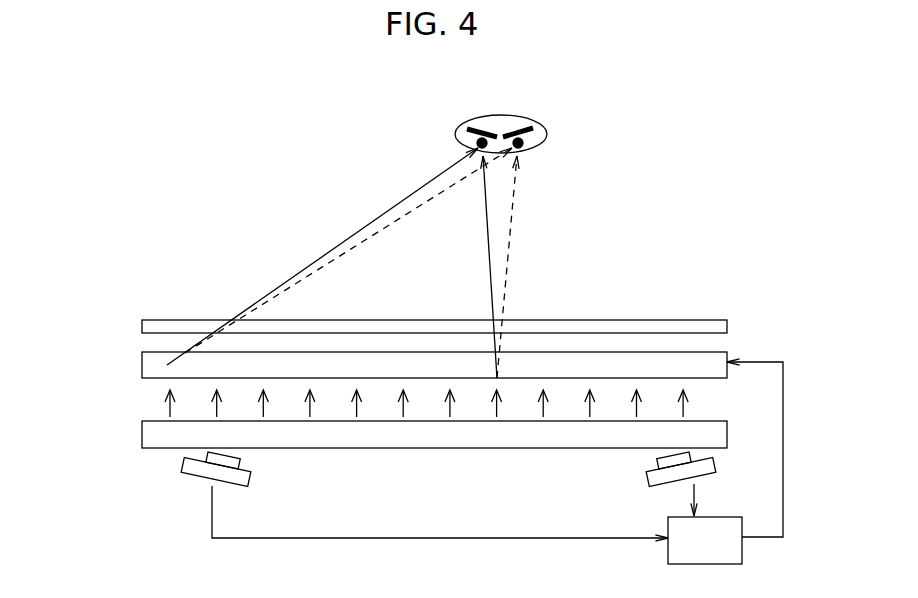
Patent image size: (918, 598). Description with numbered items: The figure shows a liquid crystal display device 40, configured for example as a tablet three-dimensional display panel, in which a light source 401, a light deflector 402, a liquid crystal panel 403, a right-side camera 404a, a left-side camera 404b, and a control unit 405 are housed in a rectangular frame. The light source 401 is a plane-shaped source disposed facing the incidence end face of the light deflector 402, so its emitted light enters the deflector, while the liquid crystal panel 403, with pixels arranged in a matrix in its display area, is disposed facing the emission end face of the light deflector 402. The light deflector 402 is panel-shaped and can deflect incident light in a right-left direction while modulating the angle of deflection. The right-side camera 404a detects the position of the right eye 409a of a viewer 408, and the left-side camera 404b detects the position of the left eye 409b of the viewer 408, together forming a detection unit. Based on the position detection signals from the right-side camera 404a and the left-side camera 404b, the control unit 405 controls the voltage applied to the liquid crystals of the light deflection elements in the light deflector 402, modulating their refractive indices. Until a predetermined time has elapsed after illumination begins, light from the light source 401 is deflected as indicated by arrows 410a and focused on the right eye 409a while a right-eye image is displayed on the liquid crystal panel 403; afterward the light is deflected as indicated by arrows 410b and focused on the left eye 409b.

The liquid crystal display device 40 is at (88, 162).
The light source 401 is at (141, 434).
The light deflector 402 is at (141, 365).
The liquid crystal panel 403 is at (141, 324).
The right-side camera 404a is at (200, 472).
The left-side camera 404b is at (655, 480).
The control unit 405 is at (677, 553).
The viewer 408 is at (510, 121).
The right eye 409a is at (462, 140).
The left eye 409b is at (542, 140).
The arrows 410a is at (490, 288).
The arrows 410b is at (410, 213).